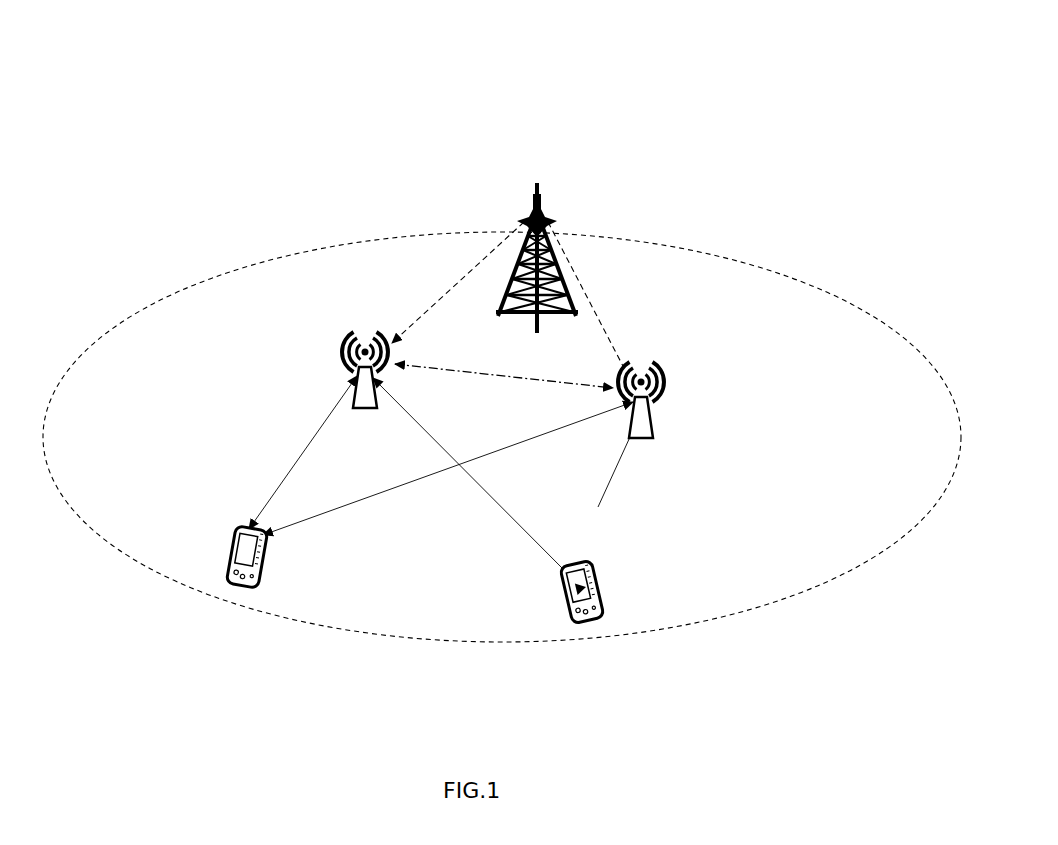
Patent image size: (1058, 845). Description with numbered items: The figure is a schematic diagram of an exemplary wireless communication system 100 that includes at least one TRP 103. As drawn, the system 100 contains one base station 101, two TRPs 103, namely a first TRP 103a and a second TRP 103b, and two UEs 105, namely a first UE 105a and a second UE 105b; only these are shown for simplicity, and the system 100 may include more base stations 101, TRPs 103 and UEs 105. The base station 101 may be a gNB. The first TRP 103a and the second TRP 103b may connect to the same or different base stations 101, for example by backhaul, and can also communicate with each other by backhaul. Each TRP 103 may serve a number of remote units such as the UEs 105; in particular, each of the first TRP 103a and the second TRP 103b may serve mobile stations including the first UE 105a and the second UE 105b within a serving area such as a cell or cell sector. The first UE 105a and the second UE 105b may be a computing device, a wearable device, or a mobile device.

The wireless communication system 100 is at (812, 42).
The base station 101 is at (546, 200).
The TRP 103 is at (331, 343).
The first TRP 103a is at (366, 349).
The second TRP 103b is at (643, 379).
The UE 105 is at (538, 572).
The first UE 105a is at (262, 513).
The second UE 105b is at (578, 559).